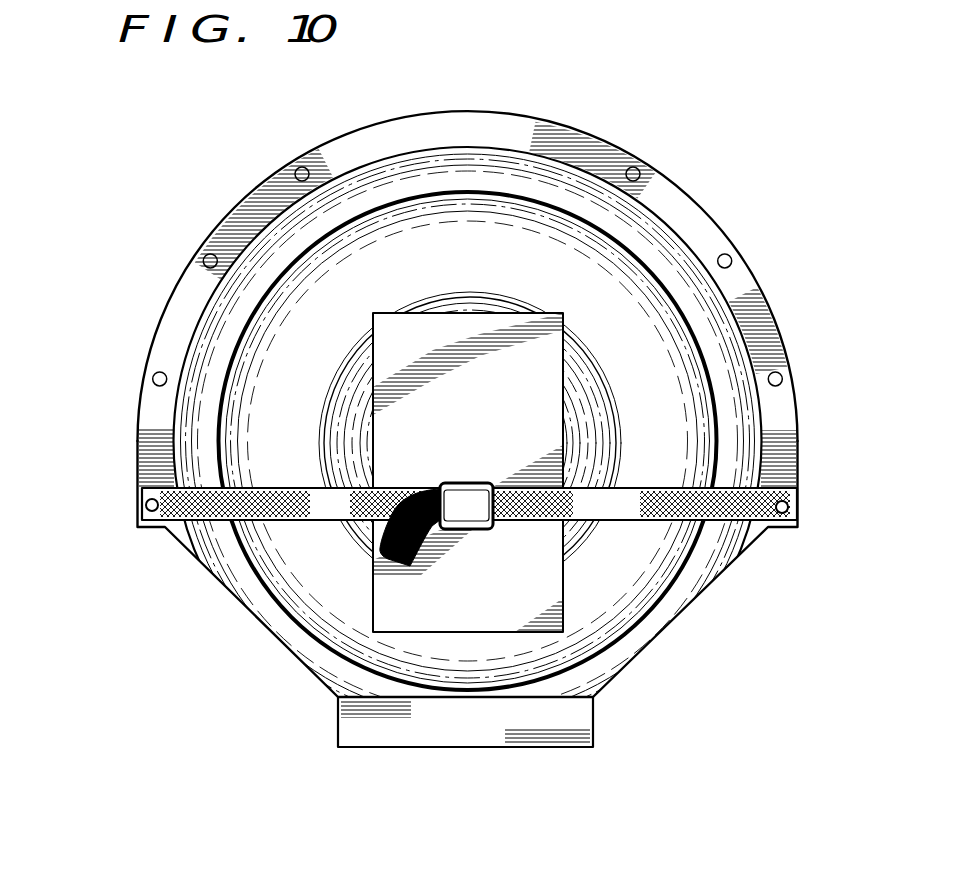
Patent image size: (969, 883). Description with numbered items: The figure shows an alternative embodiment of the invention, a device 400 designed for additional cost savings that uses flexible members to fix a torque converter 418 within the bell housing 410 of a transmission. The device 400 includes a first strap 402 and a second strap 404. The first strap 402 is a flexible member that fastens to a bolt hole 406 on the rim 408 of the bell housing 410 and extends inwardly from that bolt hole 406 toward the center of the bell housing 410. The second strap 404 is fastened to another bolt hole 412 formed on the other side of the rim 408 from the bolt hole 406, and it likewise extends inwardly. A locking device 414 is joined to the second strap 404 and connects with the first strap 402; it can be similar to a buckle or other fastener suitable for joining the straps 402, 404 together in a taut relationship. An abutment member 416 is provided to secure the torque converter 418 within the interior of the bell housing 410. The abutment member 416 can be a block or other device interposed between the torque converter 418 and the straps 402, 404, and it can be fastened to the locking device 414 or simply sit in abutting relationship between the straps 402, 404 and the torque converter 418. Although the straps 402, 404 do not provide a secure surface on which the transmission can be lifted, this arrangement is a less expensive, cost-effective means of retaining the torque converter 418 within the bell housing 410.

The device 400 is at (390, 305).
The first strap 402 is at (215, 517).
The second strap 404 is at (723, 518).
The bolt hole 406 is at (145, 505).
The rim 408 is at (174, 311).
The bell housing 410 is at (677, 188).
The bolt hole 412 is at (798, 512).
The locking device 414 is at (450, 481).
The abutment member 416 is at (468, 472).
The torque converter 418 is at (687, 347).